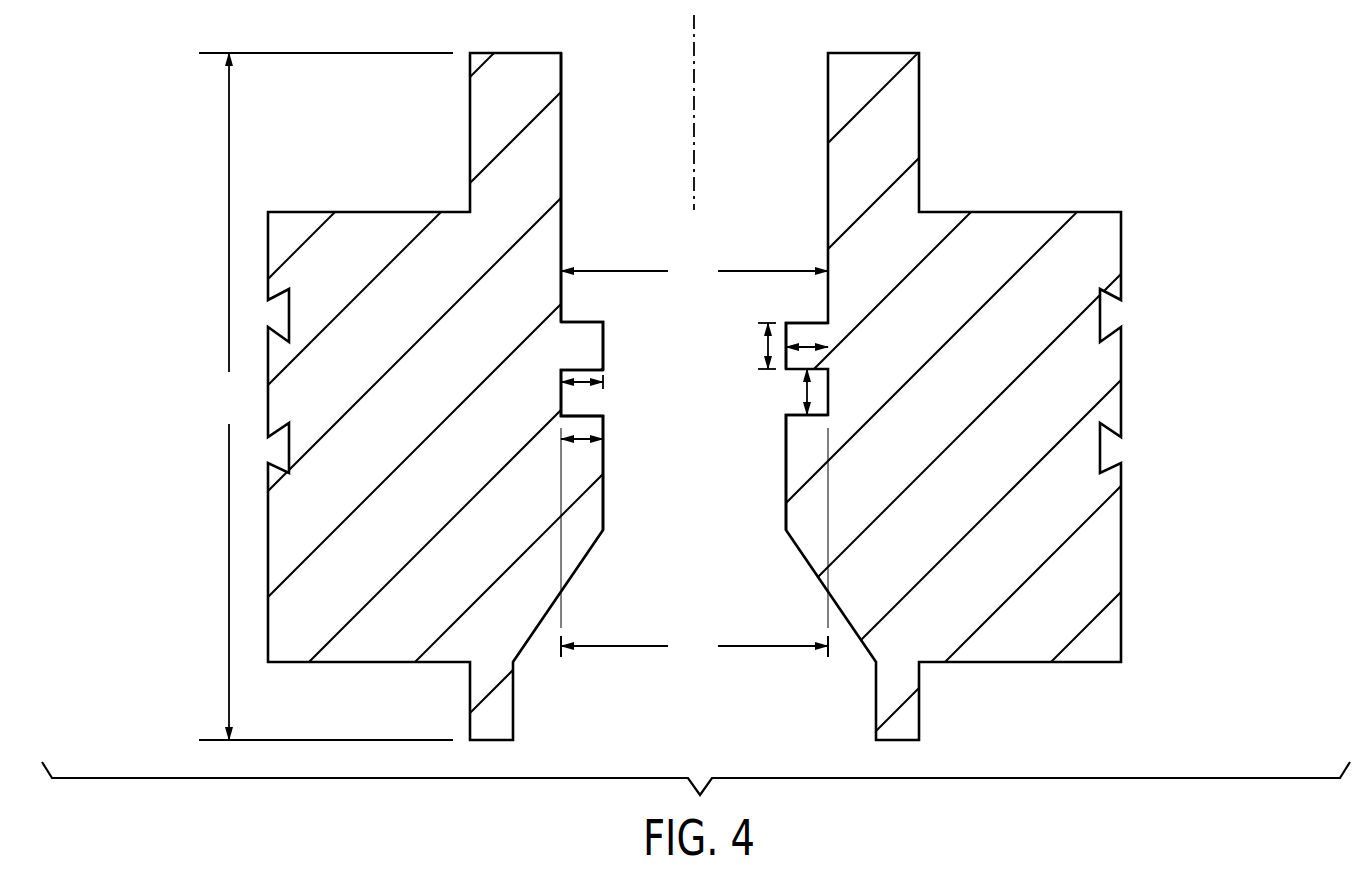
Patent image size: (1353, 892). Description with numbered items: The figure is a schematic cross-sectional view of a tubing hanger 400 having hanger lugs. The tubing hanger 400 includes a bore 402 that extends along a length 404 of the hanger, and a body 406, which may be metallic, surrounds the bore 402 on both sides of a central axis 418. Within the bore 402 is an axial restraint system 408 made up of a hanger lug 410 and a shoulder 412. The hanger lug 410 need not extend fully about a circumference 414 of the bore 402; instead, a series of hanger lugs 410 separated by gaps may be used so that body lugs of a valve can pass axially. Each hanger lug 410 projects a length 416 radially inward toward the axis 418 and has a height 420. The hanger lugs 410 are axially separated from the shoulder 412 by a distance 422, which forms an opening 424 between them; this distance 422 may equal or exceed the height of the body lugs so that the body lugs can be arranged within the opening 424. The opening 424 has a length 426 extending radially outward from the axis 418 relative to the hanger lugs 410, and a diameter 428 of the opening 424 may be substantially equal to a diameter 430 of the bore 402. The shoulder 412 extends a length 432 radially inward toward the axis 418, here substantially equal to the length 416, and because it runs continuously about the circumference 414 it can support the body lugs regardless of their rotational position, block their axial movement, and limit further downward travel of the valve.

The tubing hanger 400 is at (1058, 60).
The bore 402 is at (828, 93).
The length 404 is at (326, 396).
The body 406 is at (370, 332).
The axial restraint system 408 is at (616, 247).
The hanger lug 410 is at (583, 322).
The shoulder 412 is at (583, 416).
The circumference 414 is at (563, 120).
The length 416 is at (583, 370).
The axis 418 is at (694, 50).
The height 420 is at (767, 346).
The distance 422 is at (808, 390).
The opening 424 is at (770, 390).
The length 426 is at (807, 346).
The diameter 428 is at (694, 544).
The diameter 430 is at (694, 271).
The length 432 is at (583, 440).